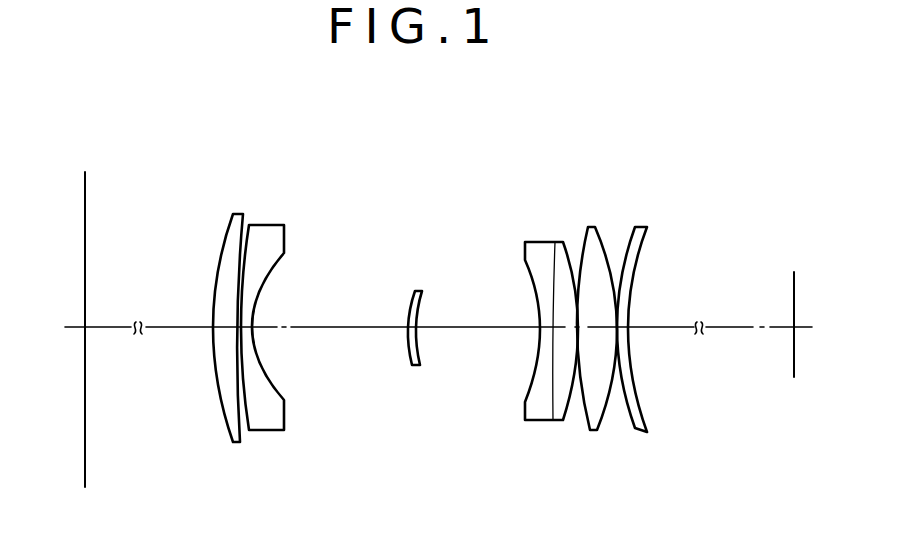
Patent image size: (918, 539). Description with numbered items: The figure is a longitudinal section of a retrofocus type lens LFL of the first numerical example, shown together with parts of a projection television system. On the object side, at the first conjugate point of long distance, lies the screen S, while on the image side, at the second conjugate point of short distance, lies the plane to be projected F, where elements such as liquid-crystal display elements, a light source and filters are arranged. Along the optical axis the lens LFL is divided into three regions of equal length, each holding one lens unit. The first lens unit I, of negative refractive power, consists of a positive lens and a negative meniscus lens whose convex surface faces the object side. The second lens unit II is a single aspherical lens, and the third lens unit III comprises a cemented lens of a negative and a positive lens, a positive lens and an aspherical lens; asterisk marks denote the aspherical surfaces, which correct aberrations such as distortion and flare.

The screen S is at (85, 228).
The plane to be projected F is at (794, 291).
The retrofocus type lens LFL is at (682, 130).
The first lens unit I is at (337, 186).
The second lens unit II is at (503, 186).
The third lens unit III is at (683, 186).